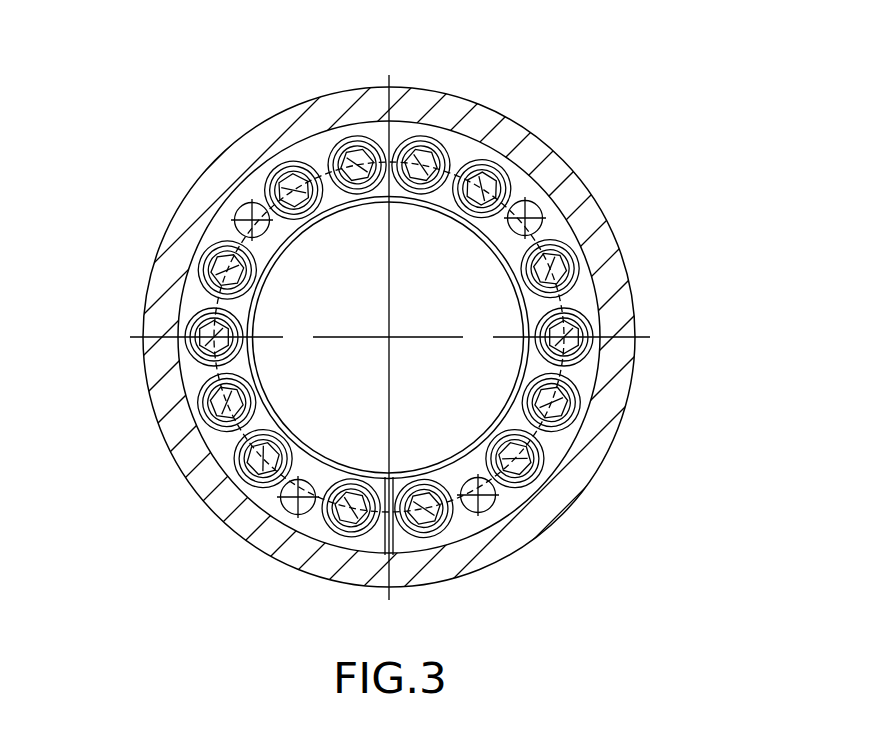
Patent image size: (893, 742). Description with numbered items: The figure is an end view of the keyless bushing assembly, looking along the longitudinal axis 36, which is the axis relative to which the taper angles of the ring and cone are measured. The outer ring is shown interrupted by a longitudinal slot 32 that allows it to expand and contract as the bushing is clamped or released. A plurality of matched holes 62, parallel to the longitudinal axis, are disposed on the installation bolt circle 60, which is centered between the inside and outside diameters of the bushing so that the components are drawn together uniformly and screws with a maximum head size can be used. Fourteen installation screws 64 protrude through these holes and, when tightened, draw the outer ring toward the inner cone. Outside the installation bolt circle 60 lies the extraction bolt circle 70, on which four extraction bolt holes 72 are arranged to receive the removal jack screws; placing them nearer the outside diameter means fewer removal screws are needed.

The longitudinal slot 32 is at (393, 555).
The longitudinal axis 36 is at (391, 334).
The installation bolt circle 60 is at (560, 304).
The matched holes 62 is at (255, 171).
The installation screw 64 is at (572, 252).
The extraction bolt circle 70 is at (555, 298).
The extraction bolt hole 72 is at (231, 208).